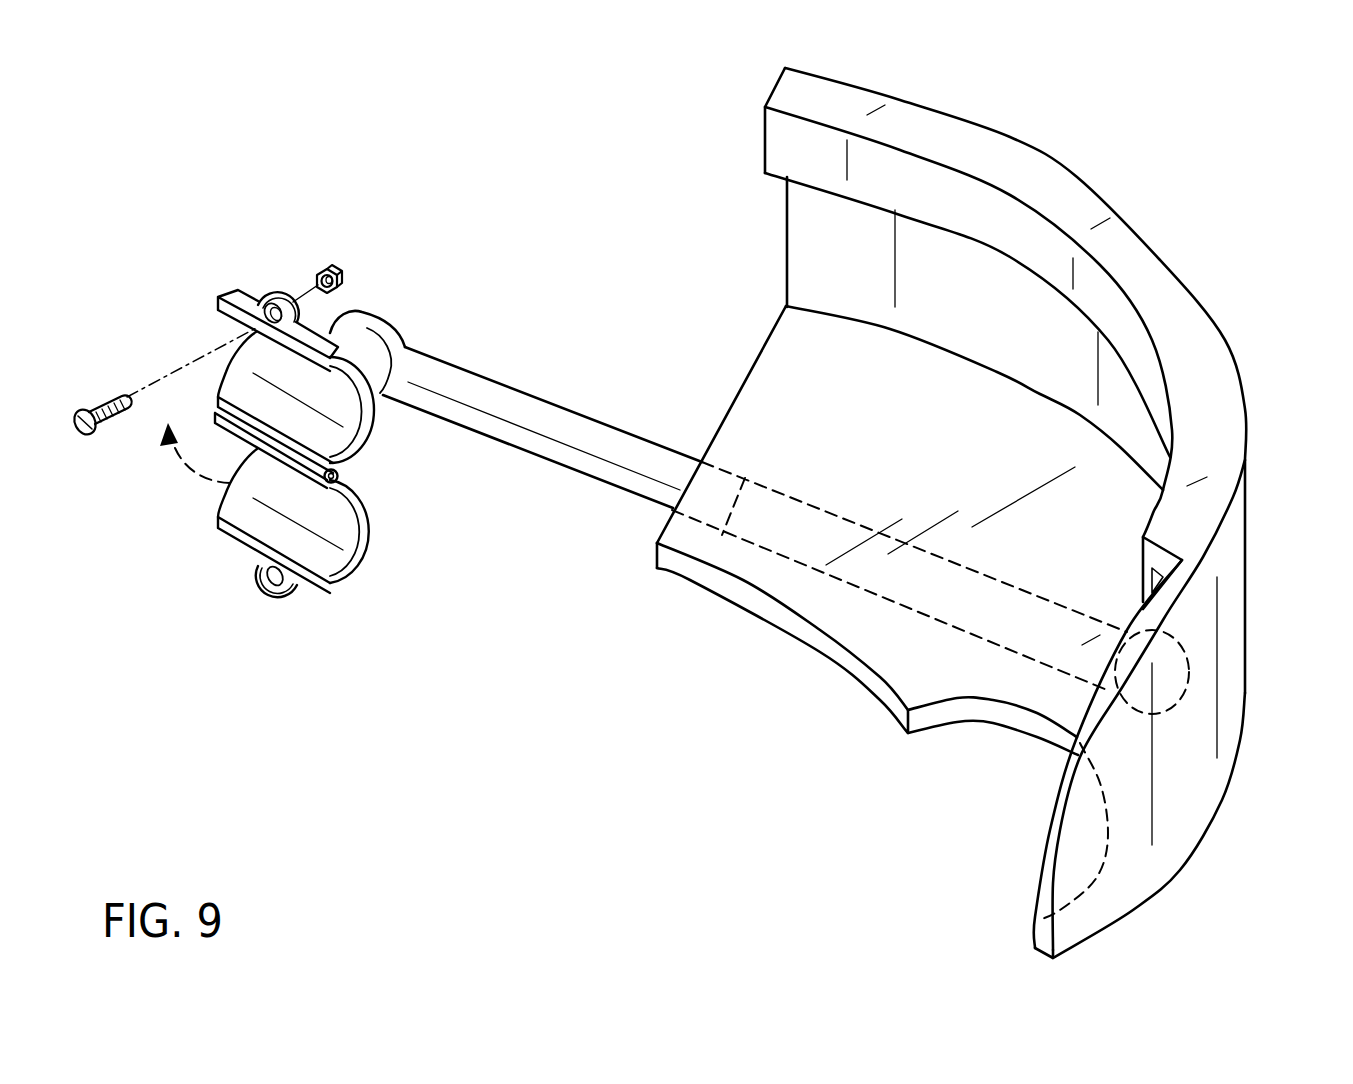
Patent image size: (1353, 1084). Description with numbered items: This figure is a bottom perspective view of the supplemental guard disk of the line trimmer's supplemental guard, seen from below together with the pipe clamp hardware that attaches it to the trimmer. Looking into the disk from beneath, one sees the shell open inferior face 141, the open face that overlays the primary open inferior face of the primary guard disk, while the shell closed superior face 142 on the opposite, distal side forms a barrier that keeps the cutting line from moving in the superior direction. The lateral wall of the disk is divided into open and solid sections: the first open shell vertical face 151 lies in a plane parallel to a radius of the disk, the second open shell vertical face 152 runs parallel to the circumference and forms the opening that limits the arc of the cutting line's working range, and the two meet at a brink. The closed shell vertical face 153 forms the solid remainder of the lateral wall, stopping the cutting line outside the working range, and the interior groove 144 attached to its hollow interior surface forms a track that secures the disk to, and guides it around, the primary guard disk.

The shell open inferior face 141 is at (736, 156).
The interior groove 144 is at (813, 137).
The shell closed superior face 142 is at (794, 349).
The first open shell vertical face 151 is at (722, 412).
The second open shell vertical face 152 is at (713, 586).
The closed shell vertical face 153 is at (1200, 658).